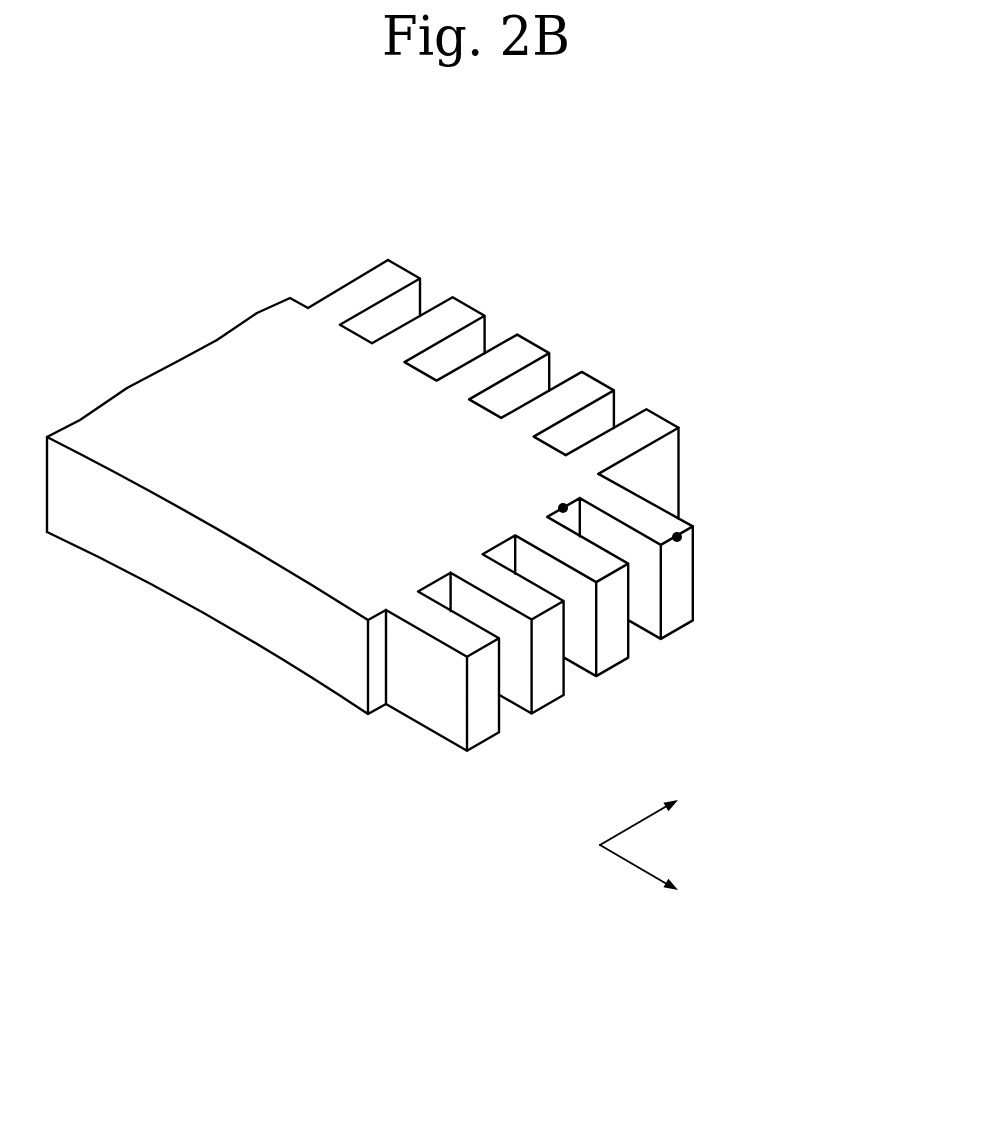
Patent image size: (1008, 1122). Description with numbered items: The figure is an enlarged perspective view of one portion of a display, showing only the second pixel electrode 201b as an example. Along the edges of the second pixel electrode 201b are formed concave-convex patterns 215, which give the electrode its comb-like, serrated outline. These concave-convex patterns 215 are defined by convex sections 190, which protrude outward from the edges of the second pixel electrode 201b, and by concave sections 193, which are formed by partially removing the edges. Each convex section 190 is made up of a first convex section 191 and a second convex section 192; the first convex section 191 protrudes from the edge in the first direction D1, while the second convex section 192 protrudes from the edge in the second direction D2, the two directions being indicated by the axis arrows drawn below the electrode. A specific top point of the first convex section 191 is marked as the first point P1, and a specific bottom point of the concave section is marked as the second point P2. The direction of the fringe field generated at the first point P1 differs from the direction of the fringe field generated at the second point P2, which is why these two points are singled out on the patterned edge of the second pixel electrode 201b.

The second pixel electrode 201b is at (772, 229).
The concave-convex patterns 215 is at (500, 323).
The concave sections 193 is at (627, 405).
The second convex section 192 is at (665, 458).
The first convex section 191 is at (661, 509).
The convex sections 190 is at (778, 438).
The first point P1 is at (677, 537).
The second point P2 is at (563, 508).
The first direction D1 is at (657, 881).
The second direction D2 is at (654, 810).